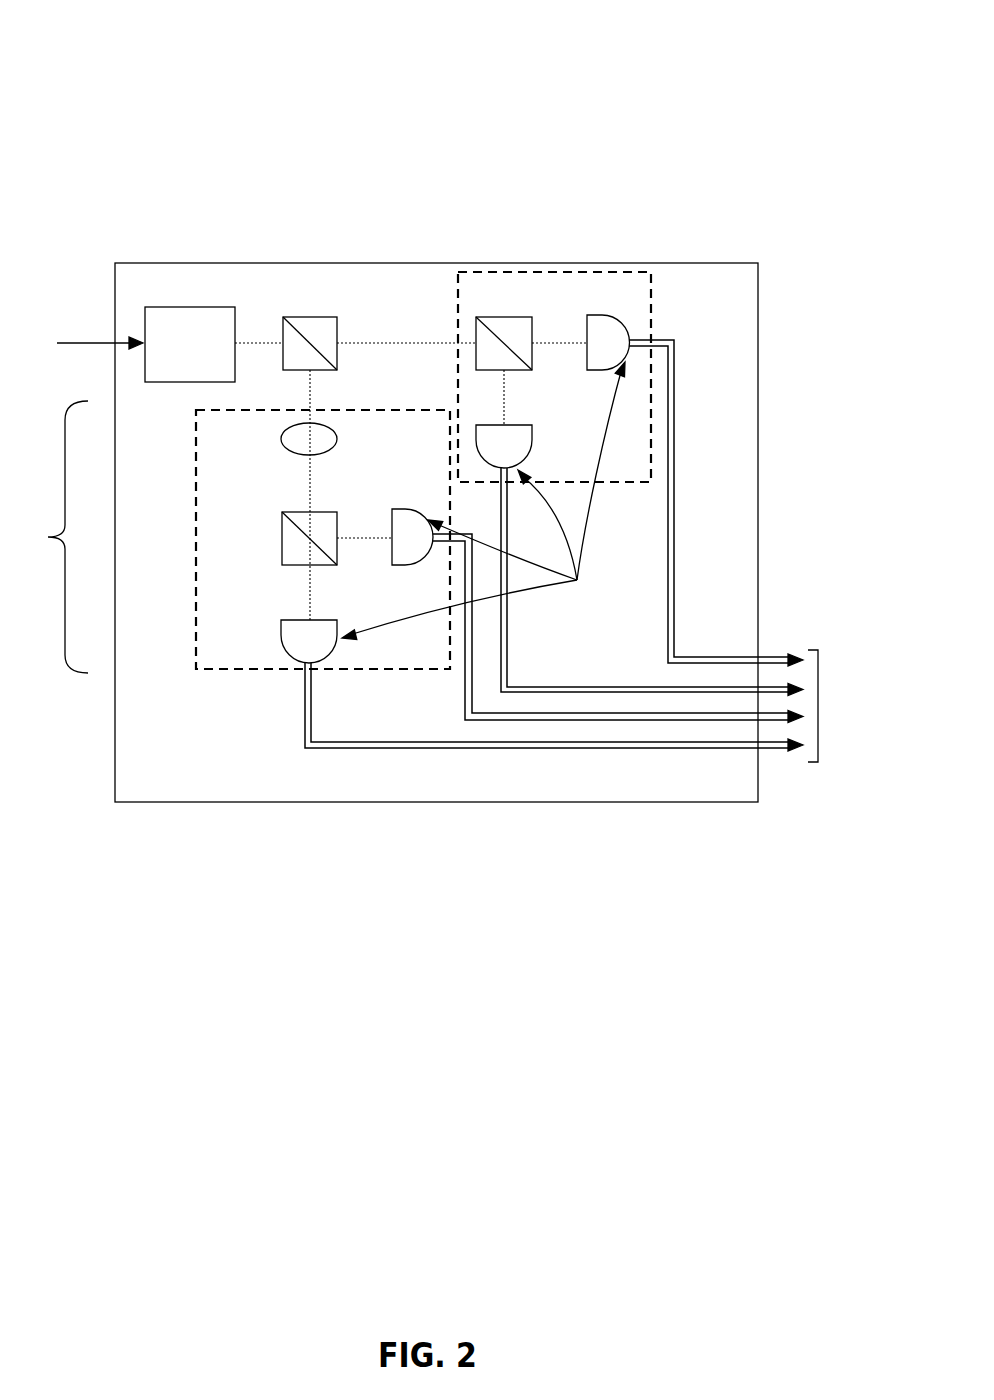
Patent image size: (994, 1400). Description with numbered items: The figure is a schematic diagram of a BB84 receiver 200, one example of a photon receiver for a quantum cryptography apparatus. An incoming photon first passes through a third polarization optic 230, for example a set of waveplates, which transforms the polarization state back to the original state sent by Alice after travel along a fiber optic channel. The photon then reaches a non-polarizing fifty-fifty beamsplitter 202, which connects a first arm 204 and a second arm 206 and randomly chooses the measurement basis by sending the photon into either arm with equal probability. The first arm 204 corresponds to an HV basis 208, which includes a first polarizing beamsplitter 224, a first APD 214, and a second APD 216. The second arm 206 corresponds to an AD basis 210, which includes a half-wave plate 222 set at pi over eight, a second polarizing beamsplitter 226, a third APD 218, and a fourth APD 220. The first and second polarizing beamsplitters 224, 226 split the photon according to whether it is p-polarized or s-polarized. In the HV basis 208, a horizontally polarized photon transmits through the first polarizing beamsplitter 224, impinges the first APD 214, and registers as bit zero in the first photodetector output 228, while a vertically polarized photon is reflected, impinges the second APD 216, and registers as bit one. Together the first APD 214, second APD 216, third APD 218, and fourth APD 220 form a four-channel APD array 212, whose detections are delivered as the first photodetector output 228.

The BB84 receiver 200 is at (760, 82).
The non-polarizing 50:50 beamsplitter 202 is at (283, 317).
The first arm 204 is at (657, 207).
The second arm 206 is at (48, 537).
The HV basis 208 is at (662, 275).
The AD basis 210 is at (213, 681).
The four-channel APD array 212 is at (483, 501).
The first APD 214 is at (602, 371).
The second APD 216 is at (530, 425).
The third APD 218 is at (410, 566).
The fourth APD 220 is at (337, 620).
The half-wave plate (π/8) 222 is at (290, 453).
The first polarizing beamsplitter 224 is at (528, 317).
The second polarizing beamsplitter 226 is at (282, 563).
The first photodetector output 228 is at (818, 706).
The third polarization optic 230 is at (187, 307).